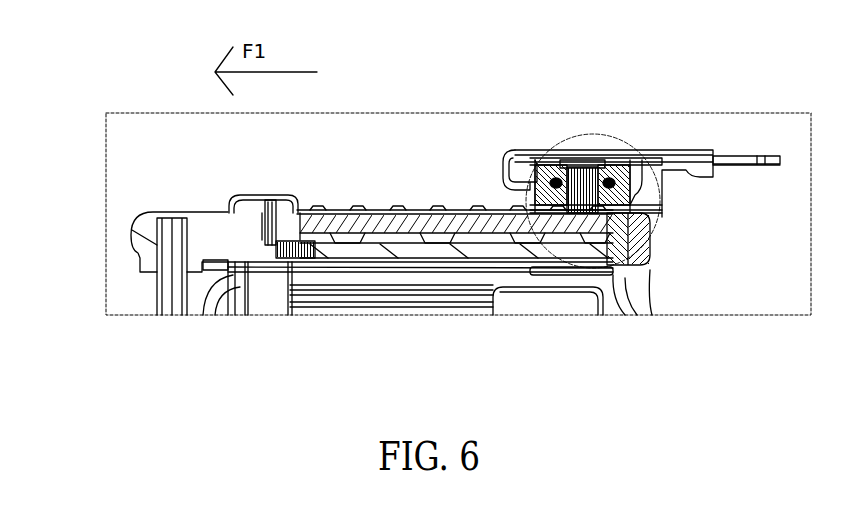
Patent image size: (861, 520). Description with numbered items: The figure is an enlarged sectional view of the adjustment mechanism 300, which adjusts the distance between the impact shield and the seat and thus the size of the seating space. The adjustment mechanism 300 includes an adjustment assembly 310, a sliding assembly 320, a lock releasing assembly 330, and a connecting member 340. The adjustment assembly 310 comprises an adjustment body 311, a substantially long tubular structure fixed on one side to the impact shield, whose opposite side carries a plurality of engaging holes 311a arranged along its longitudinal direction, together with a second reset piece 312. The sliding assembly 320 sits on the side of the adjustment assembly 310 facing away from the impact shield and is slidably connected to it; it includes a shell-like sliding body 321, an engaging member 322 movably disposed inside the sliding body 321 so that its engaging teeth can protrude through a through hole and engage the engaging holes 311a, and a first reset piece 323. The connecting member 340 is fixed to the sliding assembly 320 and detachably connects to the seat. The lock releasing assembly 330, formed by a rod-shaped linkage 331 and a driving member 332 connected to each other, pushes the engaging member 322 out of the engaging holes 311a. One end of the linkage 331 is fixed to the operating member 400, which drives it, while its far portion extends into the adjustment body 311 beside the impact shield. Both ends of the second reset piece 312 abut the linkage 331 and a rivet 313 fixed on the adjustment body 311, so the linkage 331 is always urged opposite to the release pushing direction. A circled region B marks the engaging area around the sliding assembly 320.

The adjustment mechanism 300 is at (222, 173).
The adjustment assembly 310 is at (422, 33).
The adjustment body 311 is at (318, 210).
The engaging holes 311a is at (358, 208).
The second reset piece 312 is at (285, 245).
The rivet 313 is at (257, 227).
The sliding assembly 320 is at (737, 30).
The sliding body 321 is at (643, 150).
The engaging member 322 is at (602, 182).
The first reset piece 323 is at (588, 173).
The lock releasing assembly 330 is at (425, 343).
The linkage 331 is at (247, 253).
The driving member 332 is at (317, 244).
The connecting member 340 is at (743, 162).
The operating member 400 is at (163, 290).
The detail region B is at (658, 240).